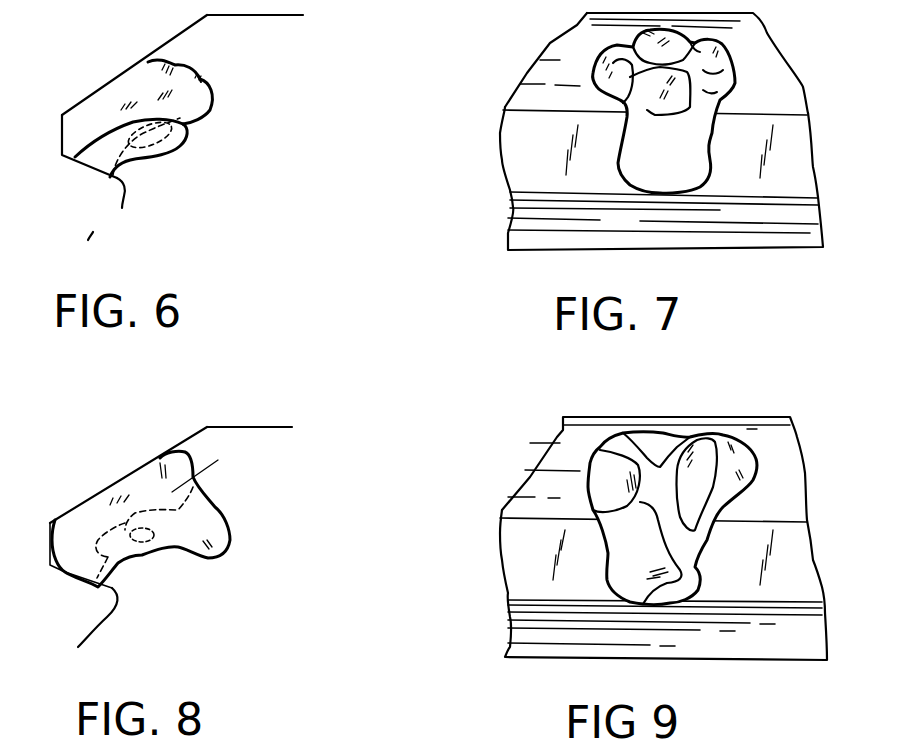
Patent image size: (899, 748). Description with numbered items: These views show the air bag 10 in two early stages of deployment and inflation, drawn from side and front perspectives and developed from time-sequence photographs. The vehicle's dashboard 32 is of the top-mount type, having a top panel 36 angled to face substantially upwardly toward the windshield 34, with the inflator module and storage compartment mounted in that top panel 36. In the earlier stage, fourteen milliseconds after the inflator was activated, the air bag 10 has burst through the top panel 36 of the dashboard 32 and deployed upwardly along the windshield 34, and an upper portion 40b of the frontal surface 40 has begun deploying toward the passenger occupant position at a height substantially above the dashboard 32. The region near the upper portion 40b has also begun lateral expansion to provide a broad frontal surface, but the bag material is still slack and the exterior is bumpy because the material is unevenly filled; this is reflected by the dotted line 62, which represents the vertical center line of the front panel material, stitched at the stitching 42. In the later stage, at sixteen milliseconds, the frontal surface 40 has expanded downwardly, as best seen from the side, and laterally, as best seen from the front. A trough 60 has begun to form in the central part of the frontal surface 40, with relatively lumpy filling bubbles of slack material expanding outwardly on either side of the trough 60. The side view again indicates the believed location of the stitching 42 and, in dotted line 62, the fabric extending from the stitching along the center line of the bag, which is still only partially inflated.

In FIG. 6, the air bag 10 is at (170, 128).
In FIG. 7, the air bag 10 is at (682, 157).
In FIG. 9, the air bag 10 is at (614, 567).
In FIG. 6, the dashboard 32 is at (125, 208).
In FIG. 7, the dashboard 32 is at (527, 150).
In FIG. 8, the dashboard 32 is at (93, 627).
In FIG. 9, the dashboard 32 is at (533, 553).
In FIG. 6, the windshield 34 is at (118, 73).
In FIG. 7, the windshield 34 is at (552, 78).
In FIG. 8, the windshield 34 is at (98, 490).
In FIG. 9, the windshield 34 is at (790, 470).
In FIG. 6, the top panel 36 is at (102, 178).
In FIG. 6, the frontal surface 40 is at (217, 104).
In FIG. 8, the frontal surface 40 is at (225, 512).
In FIG. 6, the upper portion of the frontal surface 40b is at (204, 81).
In FIG. 7, the upper portion of the frontal surface 40b is at (633, 78).
In FIG. 6, the stitching 42 is at (145, 147).
In FIG. 8, the stitching 42 is at (123, 545).
In FIG. 9, the trough 60 is at (660, 483).
In FIG. 6, the dotted line 62 is at (82, 157).
In FIG. 8, the dotted line 62 is at (216, 465).